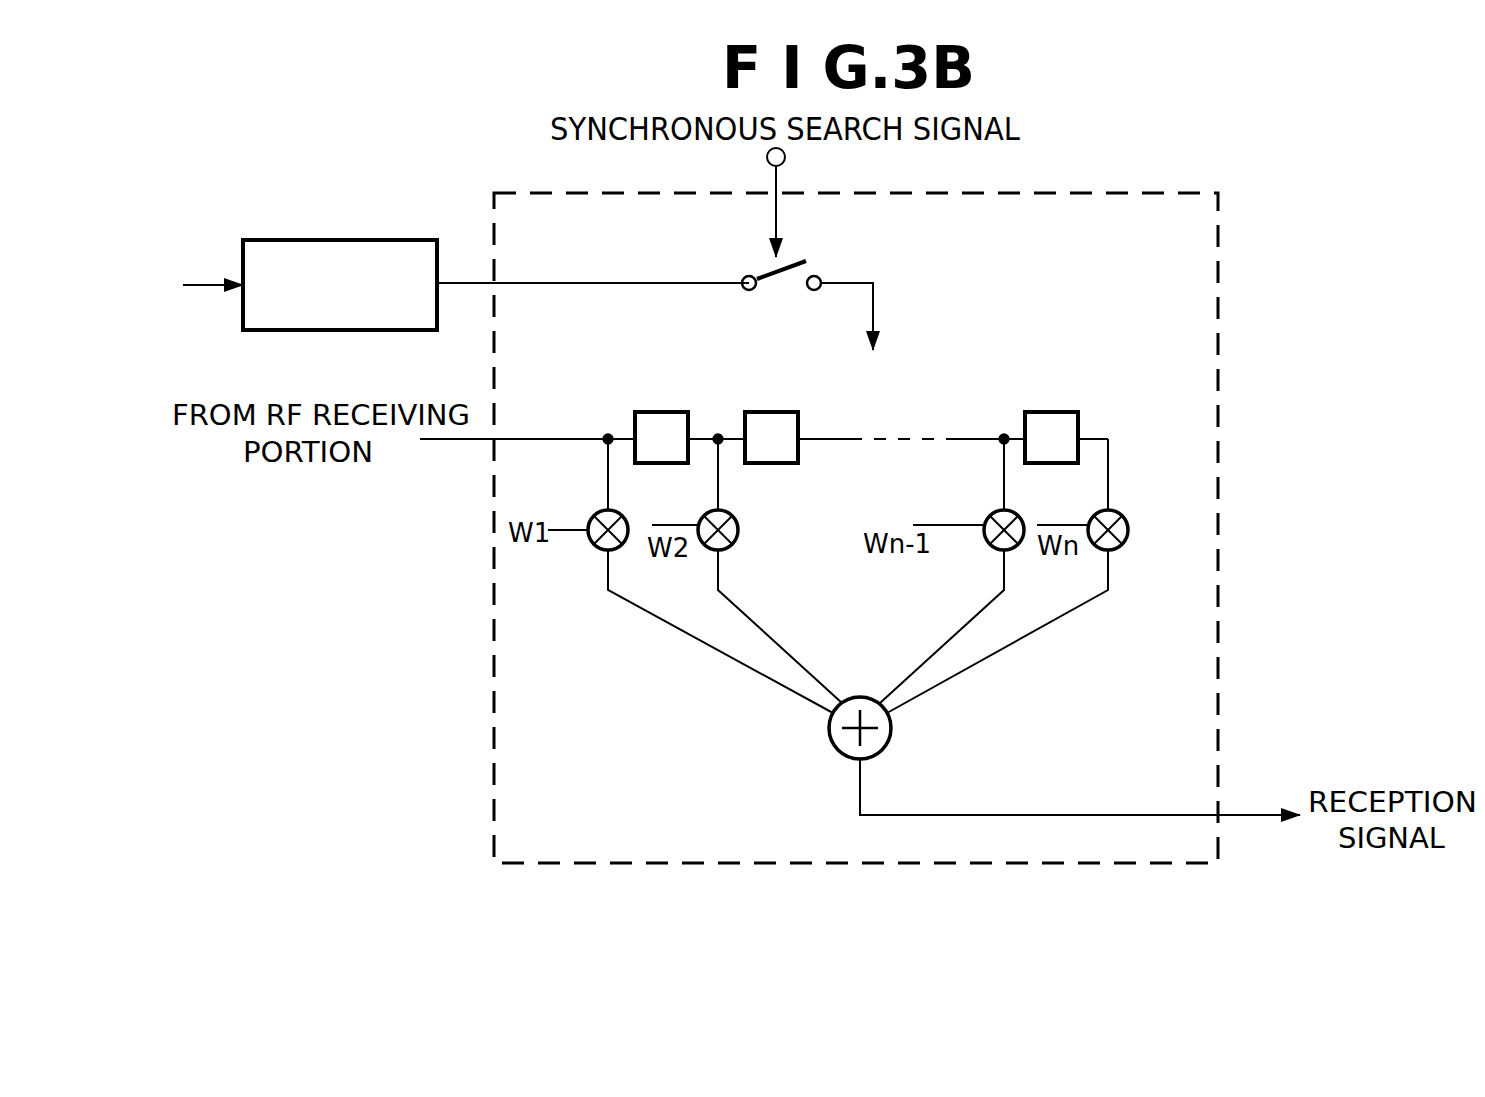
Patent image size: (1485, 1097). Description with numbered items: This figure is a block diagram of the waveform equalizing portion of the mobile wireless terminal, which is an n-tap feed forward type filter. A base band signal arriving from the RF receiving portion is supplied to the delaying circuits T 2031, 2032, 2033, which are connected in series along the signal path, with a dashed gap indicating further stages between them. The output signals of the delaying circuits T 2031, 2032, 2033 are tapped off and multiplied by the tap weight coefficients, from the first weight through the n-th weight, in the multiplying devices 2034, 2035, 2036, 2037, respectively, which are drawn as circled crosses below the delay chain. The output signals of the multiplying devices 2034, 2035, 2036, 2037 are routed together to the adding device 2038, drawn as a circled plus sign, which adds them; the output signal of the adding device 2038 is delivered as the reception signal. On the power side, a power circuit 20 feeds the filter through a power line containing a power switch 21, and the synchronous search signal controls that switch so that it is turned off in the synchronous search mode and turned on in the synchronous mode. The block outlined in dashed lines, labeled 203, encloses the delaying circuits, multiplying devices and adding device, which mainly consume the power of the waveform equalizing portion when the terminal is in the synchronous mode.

The power circuit 20 is at (342, 240).
The power switch 21 is at (784, 289).
The correlator (synchronous search / reception unit) 203 is at (1222, 357).
The delaying circuit 2031 is at (638, 412).
The delaying circuit 2032 is at (775, 412).
The delaying circuit 2033 is at (1054, 412).
The multiplying device 2034 is at (596, 512).
The multiplying device 2035 is at (742, 518).
The multiplying device 2036 is at (993, 512).
The multiplying device 2037 is at (1130, 516).
The adding device 2038 is at (830, 741).